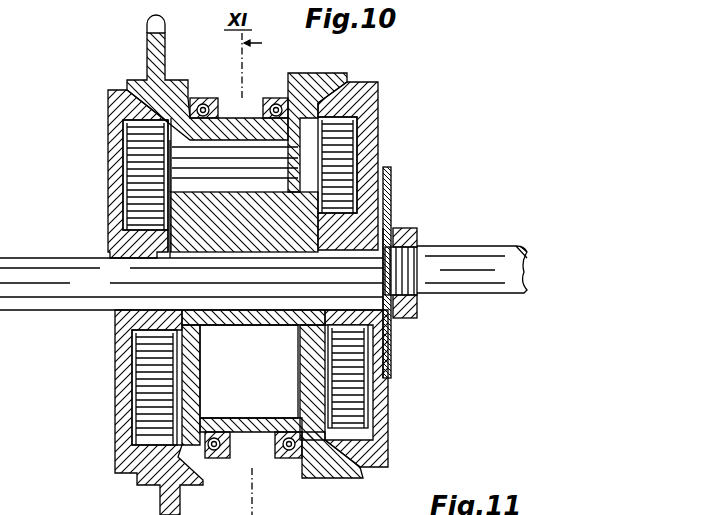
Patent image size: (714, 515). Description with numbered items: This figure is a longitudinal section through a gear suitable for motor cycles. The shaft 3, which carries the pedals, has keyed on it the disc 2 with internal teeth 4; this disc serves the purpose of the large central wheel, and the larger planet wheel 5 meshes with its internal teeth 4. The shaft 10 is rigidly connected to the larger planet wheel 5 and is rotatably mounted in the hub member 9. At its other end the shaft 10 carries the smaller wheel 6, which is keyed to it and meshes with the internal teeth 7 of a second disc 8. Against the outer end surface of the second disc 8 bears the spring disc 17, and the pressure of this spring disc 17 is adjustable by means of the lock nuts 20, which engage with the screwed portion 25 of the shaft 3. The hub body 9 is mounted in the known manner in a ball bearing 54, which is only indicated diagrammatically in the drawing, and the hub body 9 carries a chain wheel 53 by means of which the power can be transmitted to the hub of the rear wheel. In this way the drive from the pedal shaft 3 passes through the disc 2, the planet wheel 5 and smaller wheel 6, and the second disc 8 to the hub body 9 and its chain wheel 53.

The disc 2 is at (118, 107).
The shaft 3 is at (72, 292).
The internal teeth 4 is at (147, 396).
The larger planet wheel 5 is at (140, 148).
The smaller wheel 6 is at (343, 143).
The internal teeth 7 is at (353, 378).
The second disc 8 is at (368, 97).
The hub member 9 is at (247, 433).
The shaft 10 is at (245, 158).
The spring disc 17 is at (388, 197).
The lock nuts 20 is at (410, 319).
The screwed portion 25 is at (415, 247).
The chain wheel 53 is at (148, 46).
The ball bearing 54 is at (203, 104).